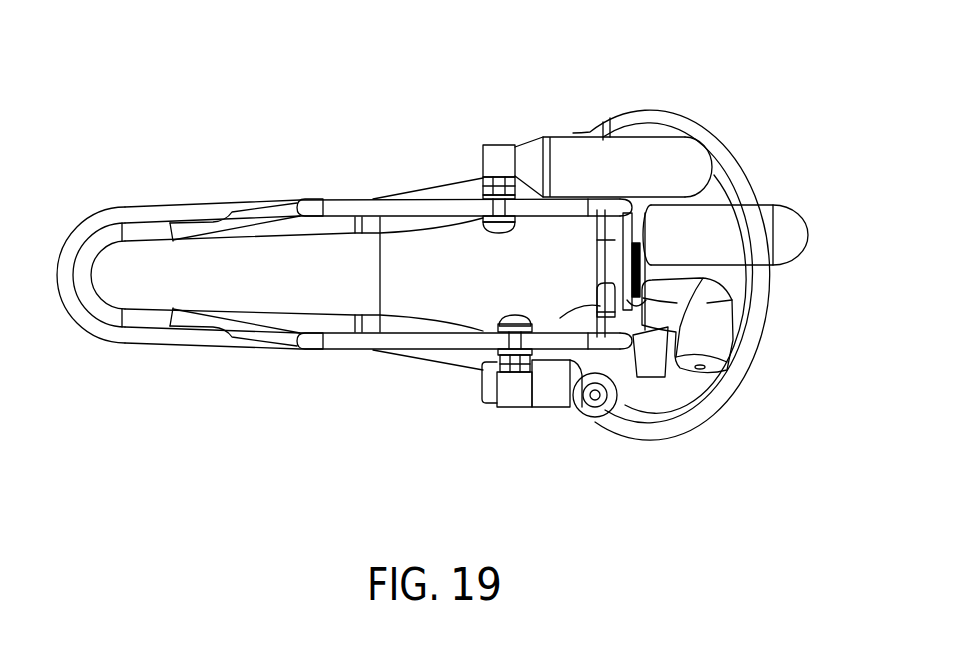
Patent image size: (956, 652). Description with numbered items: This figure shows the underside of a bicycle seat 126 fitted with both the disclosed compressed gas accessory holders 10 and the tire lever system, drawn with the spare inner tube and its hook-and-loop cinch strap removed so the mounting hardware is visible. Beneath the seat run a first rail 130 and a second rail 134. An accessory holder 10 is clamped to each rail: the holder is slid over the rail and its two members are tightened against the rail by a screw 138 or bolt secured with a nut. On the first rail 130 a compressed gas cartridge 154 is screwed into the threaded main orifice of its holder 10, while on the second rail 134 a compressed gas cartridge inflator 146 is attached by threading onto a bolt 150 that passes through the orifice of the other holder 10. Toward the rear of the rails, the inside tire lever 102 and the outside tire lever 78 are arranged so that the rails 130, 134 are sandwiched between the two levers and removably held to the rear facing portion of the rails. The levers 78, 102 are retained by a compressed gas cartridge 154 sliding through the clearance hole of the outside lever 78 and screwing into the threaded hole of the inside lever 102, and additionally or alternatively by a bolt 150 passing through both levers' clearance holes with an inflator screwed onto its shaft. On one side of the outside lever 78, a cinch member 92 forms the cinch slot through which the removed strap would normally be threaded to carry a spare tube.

The compressed gas accessory holder 10 is at (497, 152).
The outside tire lever 78 is at (657, 203).
The cinch member 92 is at (637, 273).
The inside tire lever 102 is at (610, 243).
The bicycle seat 126 is at (122, 333).
The first rail 130 is at (347, 205).
The second rail 134 is at (345, 340).
The screw 138 is at (487, 218).
The compressed gas cartridge inflator 146 is at (720, 325).
The bolt 150 is at (492, 390).
The compressed gas cartridge 154 is at (582, 150).